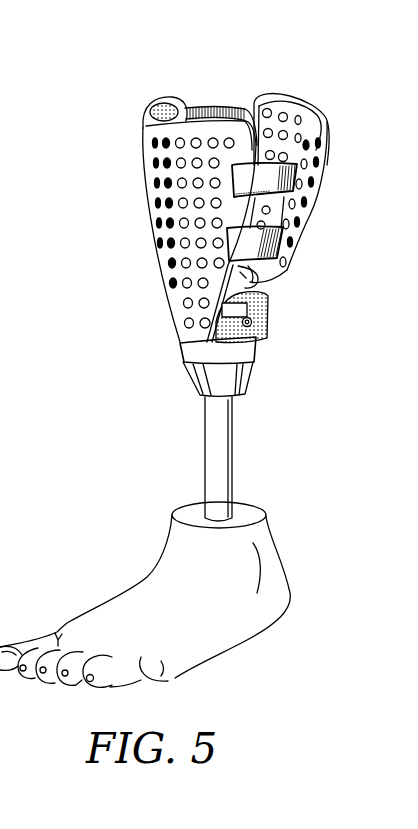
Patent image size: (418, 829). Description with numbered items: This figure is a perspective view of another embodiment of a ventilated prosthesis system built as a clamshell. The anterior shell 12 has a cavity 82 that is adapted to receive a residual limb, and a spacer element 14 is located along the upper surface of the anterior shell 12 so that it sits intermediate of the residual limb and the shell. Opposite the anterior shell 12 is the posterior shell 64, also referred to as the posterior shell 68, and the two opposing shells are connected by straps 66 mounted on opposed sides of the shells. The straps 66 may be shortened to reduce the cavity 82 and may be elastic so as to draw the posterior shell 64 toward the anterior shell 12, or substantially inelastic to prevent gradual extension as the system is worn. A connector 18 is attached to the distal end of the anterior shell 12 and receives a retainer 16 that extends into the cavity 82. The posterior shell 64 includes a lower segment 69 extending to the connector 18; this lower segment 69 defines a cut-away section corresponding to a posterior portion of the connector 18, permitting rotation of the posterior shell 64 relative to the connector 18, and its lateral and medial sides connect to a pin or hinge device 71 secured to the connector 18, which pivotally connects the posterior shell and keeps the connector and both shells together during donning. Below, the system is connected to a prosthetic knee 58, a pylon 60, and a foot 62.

The anterior shell 12 is at (153, 250).
The spacer element 14 is at (175, 102).
The cavity 82 is at (232, 100).
The posterior shell 68 is at (290, 106).
The posterior shell 64 is at (297, 173).
The straps 66 is at (290, 241).
The lower segment 69 is at (276, 288).
The retainer 16 is at (272, 305).
The pin or hinge device 71 is at (262, 324).
The connector 18 is at (248, 348).
The prosthetic knee 58 is at (206, 379).
The pylon 60 is at (227, 447).
The foot 62 is at (277, 577).